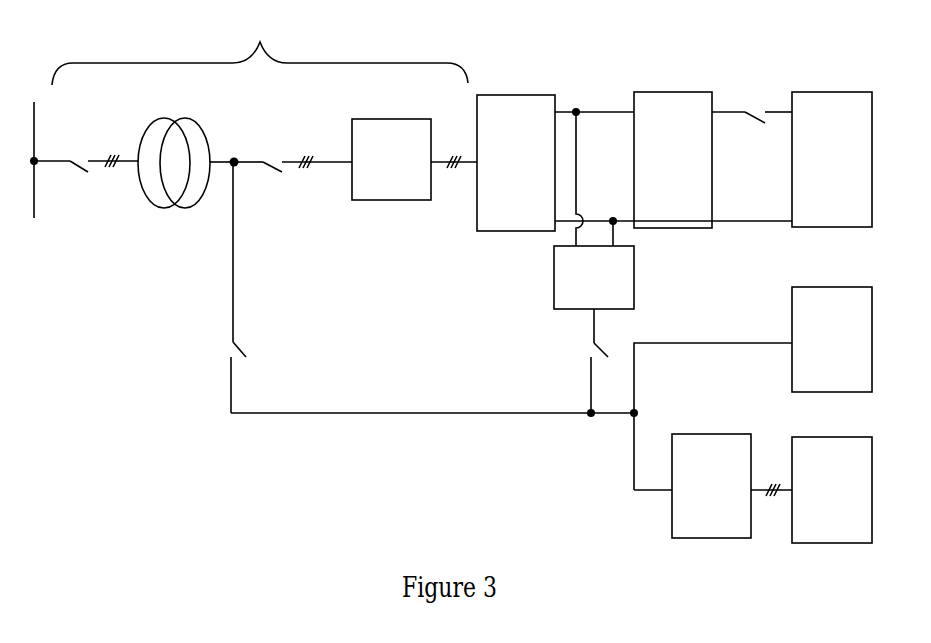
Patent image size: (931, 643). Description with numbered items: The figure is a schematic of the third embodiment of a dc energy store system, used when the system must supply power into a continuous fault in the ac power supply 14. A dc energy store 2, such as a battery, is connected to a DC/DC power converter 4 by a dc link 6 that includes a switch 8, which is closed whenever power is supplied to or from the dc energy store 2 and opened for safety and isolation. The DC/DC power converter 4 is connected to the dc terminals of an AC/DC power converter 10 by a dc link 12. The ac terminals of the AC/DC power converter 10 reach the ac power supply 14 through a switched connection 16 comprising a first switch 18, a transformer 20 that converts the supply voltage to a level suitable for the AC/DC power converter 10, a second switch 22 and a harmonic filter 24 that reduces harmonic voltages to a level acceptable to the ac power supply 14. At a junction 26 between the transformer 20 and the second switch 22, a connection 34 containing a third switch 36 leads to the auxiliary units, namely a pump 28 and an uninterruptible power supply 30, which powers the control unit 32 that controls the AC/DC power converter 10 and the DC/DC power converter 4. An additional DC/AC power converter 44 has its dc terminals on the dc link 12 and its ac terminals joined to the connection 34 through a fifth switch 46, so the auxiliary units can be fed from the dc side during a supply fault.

The dc energy store 2 is at (824, 172).
The DC/DC power converter 4 is at (665, 174).
The dc link 6 is at (744, 227).
The switch 8 is at (759, 103).
The AC/DC power converter 10 is at (502, 174).
The dc link 12 is at (603, 97).
The ac power supply 14 is at (44, 210).
The switched connection 16 is at (260, 50).
The first switch 18 is at (87, 152).
The transformer 20 is at (188, 197).
The second switch 22 is at (291, 175).
The harmonic filter 24 is at (377, 174).
The junction 26 is at (237, 150).
The pump 28 is at (818, 350).
The uninterruptible power supply 30 is at (697, 498).
The control unit 32 is at (818, 498).
The connection 34 is at (356, 419).
The third switch 36 is at (217, 353).
The DC/AC power converter 44 is at (580, 288).
The fifth switch 46 is at (586, 348).